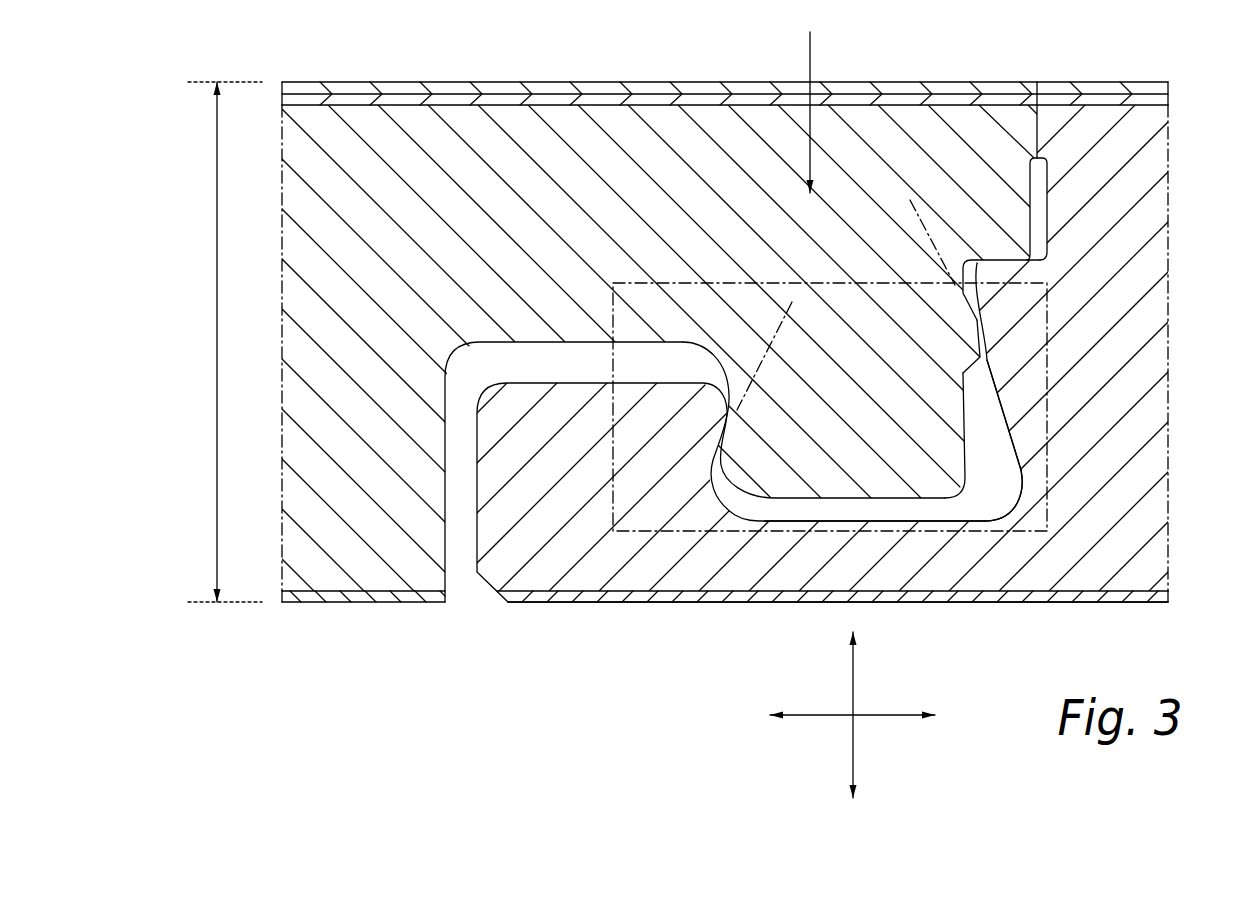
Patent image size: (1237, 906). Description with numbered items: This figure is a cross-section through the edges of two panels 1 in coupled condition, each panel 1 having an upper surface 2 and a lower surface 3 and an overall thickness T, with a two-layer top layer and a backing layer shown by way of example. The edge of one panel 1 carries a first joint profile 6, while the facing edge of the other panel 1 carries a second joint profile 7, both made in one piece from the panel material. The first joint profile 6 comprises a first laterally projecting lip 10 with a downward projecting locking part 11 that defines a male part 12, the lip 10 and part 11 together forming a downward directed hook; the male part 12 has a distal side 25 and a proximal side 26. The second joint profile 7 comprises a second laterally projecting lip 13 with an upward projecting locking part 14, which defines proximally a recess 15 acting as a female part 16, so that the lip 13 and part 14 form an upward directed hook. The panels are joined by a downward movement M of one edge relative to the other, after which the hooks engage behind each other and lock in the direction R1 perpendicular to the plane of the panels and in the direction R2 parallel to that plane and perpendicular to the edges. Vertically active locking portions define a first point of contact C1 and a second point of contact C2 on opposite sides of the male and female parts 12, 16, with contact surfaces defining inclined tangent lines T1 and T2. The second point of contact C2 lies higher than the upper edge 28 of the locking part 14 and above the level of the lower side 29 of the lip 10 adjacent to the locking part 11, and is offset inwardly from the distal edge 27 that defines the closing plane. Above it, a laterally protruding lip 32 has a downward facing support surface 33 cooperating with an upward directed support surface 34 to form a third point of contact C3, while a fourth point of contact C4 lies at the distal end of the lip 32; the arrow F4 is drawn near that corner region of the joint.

The panel 1 is at (317, 263).
The upper surface 2 is at (293, 83).
The lower surface 3 is at (1100, 605).
The first joint profile 6 is at (603, 112).
The second joint profile 7 is at (535, 575).
The first laterally projecting lip 10 is at (480, 227).
The downward projecting locking part 11 is at (983, 392).
The male part 12 is at (975, 477).
The second laterally projecting lip 13 is at (935, 572).
The upward projecting locking part 14 is at (580, 450).
The recess 15 is at (743, 520).
The female part 16 is at (1022, 512).
The distal side 25 is at (937, 397).
The proximal side 26 is at (605, 372).
The distal edge 27 is at (1040, 117).
The upper edge 28 is at (703, 376).
The lower side 29 is at (627, 350).
The laterally protruding lip 32 is at (1023, 178).
The downward facing support surface 33 is at (1027, 237).
The upward directed support surface 34 is at (1010, 267).
The overall thickness T is at (220, 342).
The inclined tangent line T1 is at (775, 345).
The inclined tangent line T2 is at (997, 250).
The downward movement M is at (807, 60).
The first point of contact C1 is at (705, 426).
The second point of contact C2 is at (987, 312).
The third point of contact C3 is at (1047, 253).
The fourth point of contact C4 is at (1042, 128).
The force direction F4 is at (613, 533).
The direction perpendicular to the plane R1 is at (875, 715).
The direction parallel to the plane R2 is at (843, 734).